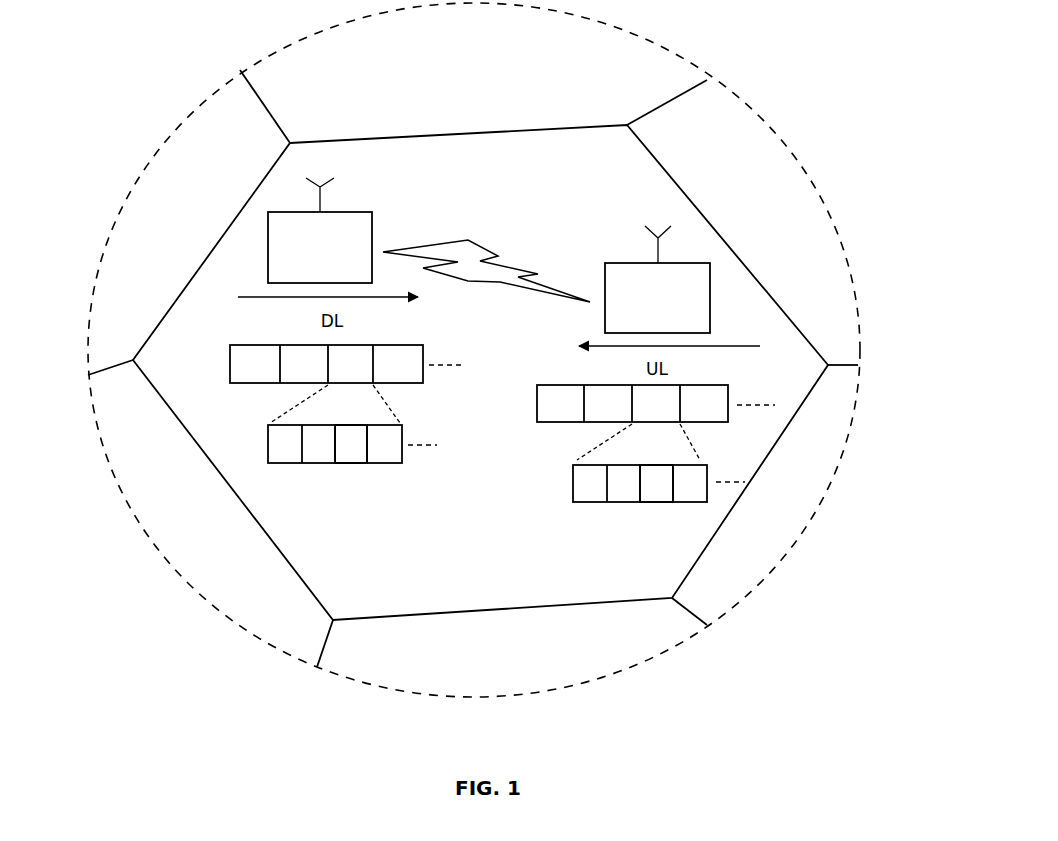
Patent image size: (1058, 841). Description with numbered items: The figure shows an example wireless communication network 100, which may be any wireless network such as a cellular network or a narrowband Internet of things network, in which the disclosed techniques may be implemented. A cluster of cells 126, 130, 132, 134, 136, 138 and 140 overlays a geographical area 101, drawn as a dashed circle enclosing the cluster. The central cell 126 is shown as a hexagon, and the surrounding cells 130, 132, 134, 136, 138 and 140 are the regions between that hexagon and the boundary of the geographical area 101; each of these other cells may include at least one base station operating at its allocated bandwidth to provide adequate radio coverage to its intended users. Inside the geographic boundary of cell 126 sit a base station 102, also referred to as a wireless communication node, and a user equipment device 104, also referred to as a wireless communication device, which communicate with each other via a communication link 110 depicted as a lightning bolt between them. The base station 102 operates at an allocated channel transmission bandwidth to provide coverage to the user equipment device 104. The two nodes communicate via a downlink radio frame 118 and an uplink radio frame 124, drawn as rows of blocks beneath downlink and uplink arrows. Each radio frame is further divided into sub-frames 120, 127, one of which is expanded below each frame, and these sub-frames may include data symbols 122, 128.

The wireless communication network 100 is at (880, 112).
The geographical area 101 is at (106, 231).
The base station 102 is at (320, 230).
The user equipment device 104 is at (657, 279).
The communication link 110 is at (476, 248).
The downlink radio frame 118 is at (232, 366).
The sub-frame 120 is at (270, 456).
The data symbol 122 is at (352, 465).
The uplink radio frame 124 is at (544, 406).
The cell 126 is at (497, 574).
The sub-frame 127 is at (575, 494).
The data symbol 128 is at (657, 503).
The cell 130 is at (222, 149).
The cell 132 is at (583, 95).
The cell 134 is at (803, 285).
The cell 136 is at (733, 563).
The cell 138 is at (423, 643).
The cell 140 is at (148, 445).